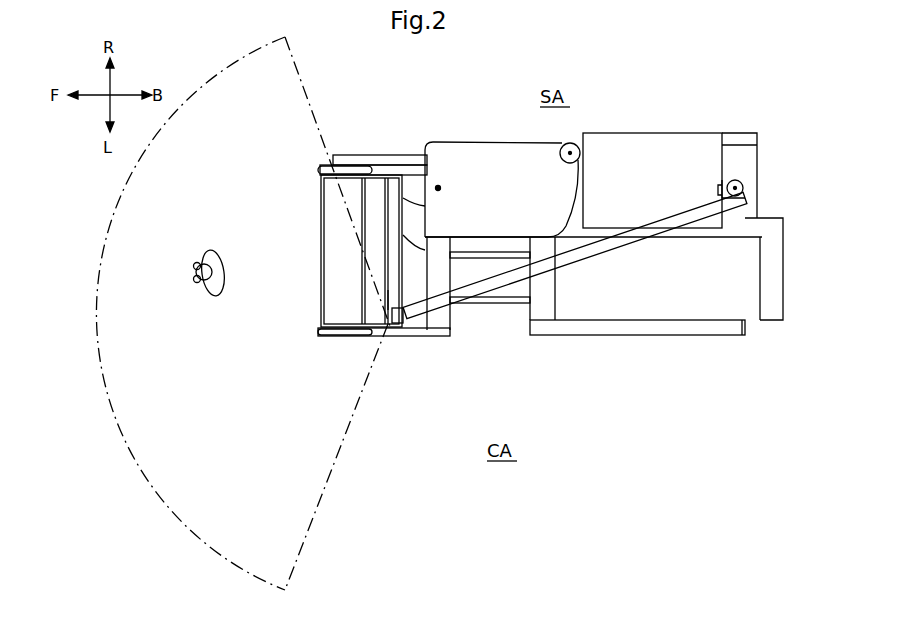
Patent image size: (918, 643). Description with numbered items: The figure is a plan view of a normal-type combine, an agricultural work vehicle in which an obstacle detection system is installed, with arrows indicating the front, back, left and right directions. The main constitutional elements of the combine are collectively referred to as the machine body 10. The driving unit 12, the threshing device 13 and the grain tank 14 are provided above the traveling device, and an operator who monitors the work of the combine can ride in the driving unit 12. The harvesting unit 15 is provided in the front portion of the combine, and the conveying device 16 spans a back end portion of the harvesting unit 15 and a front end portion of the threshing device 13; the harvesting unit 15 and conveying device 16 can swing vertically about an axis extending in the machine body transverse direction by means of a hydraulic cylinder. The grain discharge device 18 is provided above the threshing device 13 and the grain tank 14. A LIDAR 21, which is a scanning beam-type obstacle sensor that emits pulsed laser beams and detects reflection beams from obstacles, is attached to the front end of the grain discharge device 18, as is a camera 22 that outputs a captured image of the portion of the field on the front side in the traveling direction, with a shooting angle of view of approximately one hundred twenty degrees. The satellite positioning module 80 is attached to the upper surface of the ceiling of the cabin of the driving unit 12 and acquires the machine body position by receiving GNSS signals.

The machine body 10 is at (498, 108).
The driving unit 12 is at (473, 175).
The threshing device 13 is at (748, 255).
The grain tank 14 is at (683, 148).
The harvesting unit 15 is at (330, 205).
The conveying device 16 is at (515, 296).
The grain discharge device 18 is at (608, 250).
The LIDAR 21 is at (390, 318).
The camera 22 is at (385, 305).
The satellite positioning module 80 is at (437, 185).